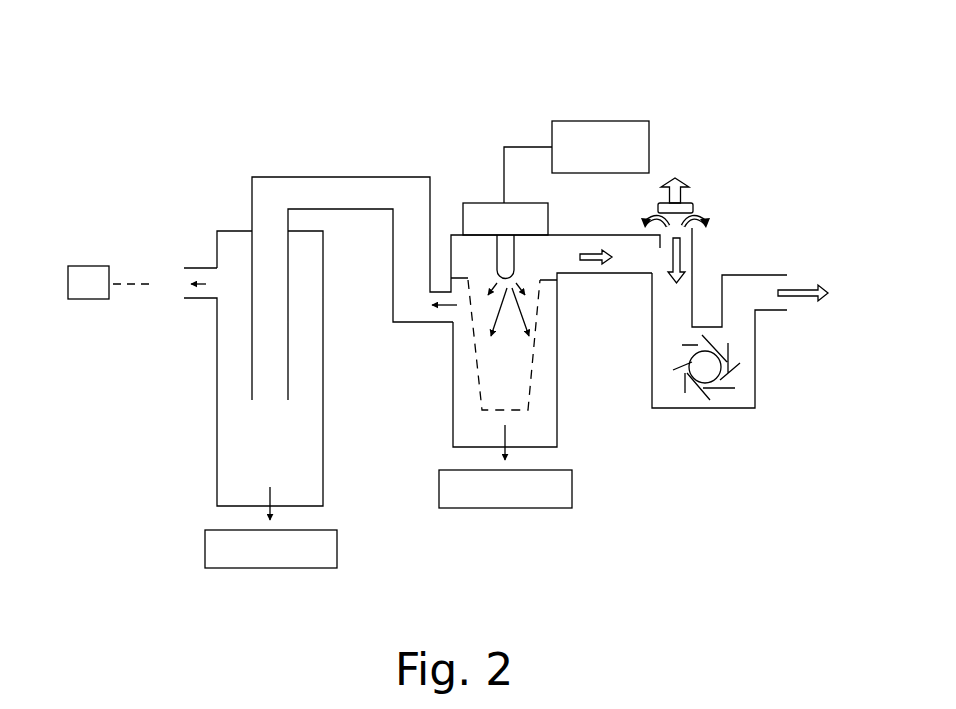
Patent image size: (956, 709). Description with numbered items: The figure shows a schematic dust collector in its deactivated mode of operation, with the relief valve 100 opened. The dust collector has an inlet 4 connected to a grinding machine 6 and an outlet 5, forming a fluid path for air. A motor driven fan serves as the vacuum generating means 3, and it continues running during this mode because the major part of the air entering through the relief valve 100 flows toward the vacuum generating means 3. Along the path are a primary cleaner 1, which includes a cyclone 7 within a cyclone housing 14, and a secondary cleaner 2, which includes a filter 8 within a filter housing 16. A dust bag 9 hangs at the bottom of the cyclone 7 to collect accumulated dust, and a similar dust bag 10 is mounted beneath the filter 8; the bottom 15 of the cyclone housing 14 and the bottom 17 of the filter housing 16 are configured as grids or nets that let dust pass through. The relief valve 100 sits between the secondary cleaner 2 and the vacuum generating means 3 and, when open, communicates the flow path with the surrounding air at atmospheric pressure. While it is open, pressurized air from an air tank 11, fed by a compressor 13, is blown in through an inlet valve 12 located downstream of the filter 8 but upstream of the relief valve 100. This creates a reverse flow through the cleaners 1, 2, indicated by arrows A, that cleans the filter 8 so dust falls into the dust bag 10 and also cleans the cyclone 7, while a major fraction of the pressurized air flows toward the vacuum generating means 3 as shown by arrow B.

The primary cleaner 1 is at (348, 383).
The secondary cleaner 2 is at (598, 316).
The vacuum generating means 3 is at (722, 378).
The inlet 4 is at (195, 268).
The outlet 5 is at (762, 283).
The grinding machine 6 is at (88, 278).
The cyclone 7 is at (308, 433).
The filter 8 is at (537, 330).
The dust bag 9 is at (327, 550).
The dust bag 10 is at (508, 497).
The air tank 11 is at (488, 208).
The inlet valve 12 is at (505, 262).
The compressor 13 is at (604, 143).
The cyclone housing 14 is at (325, 487).
The bottom of the cyclone housing 15 is at (262, 504).
The filter housing 16 is at (453, 332).
The bottom of the filter housing 17 is at (480, 445).
The relief valve 100 is at (719, 193).